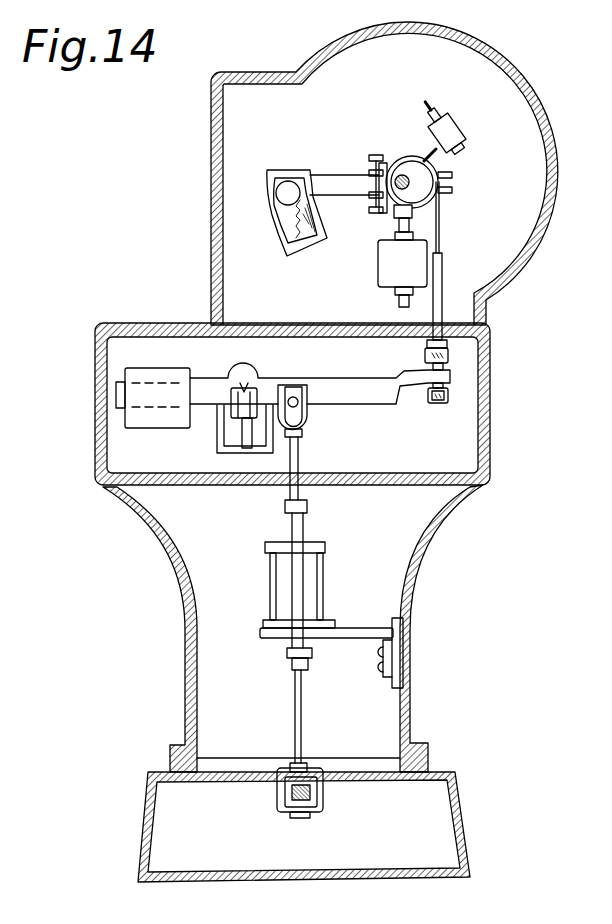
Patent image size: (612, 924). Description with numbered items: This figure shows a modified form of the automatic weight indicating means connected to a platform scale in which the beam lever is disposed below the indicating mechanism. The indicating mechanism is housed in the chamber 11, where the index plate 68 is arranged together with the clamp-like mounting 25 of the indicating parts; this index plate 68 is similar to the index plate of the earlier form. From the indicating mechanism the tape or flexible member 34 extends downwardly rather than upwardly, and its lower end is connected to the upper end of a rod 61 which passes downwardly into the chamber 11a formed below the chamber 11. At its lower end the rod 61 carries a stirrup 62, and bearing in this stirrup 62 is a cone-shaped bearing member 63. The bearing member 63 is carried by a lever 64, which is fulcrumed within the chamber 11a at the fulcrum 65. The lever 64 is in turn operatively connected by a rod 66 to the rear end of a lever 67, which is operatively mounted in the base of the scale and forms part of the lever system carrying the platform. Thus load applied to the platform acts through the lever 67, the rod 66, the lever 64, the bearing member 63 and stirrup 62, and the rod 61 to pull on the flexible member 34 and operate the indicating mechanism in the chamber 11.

The chamber 11 is at (233, 278).
The chamber 11a is at (468, 430).
The clamp ring 25 is at (403, 181).
The tape or flexible member 34 is at (440, 227).
The rod 61 is at (438, 297).
The stirrup 62 is at (448, 392).
The cone-shaped bearing member 63 is at (428, 395).
The lever 64 is at (355, 388).
The fulcrum 65 is at (233, 410).
The rod 66 is at (293, 467).
The lever 67 is at (277, 797).
The index plate 68 is at (289, 257).